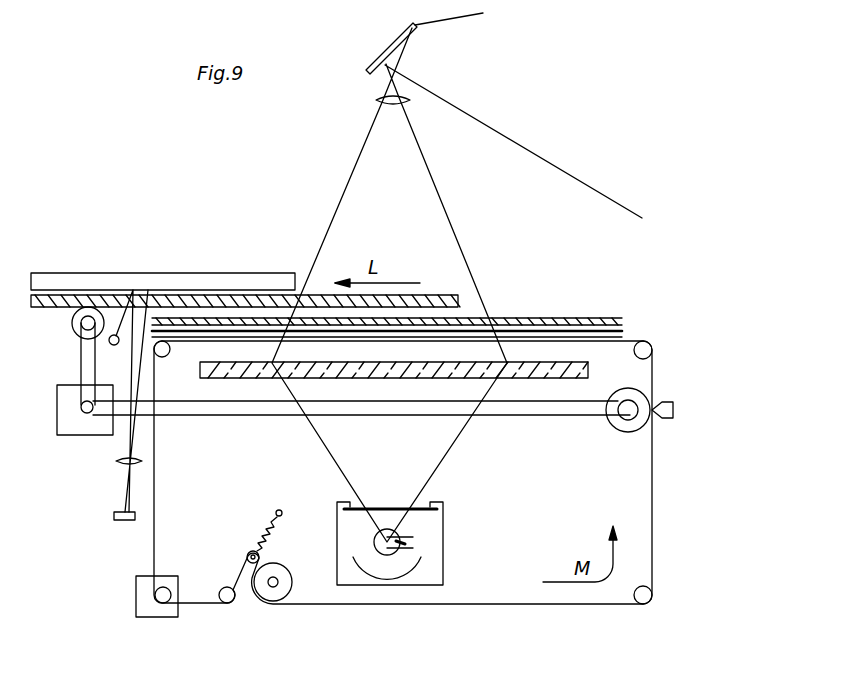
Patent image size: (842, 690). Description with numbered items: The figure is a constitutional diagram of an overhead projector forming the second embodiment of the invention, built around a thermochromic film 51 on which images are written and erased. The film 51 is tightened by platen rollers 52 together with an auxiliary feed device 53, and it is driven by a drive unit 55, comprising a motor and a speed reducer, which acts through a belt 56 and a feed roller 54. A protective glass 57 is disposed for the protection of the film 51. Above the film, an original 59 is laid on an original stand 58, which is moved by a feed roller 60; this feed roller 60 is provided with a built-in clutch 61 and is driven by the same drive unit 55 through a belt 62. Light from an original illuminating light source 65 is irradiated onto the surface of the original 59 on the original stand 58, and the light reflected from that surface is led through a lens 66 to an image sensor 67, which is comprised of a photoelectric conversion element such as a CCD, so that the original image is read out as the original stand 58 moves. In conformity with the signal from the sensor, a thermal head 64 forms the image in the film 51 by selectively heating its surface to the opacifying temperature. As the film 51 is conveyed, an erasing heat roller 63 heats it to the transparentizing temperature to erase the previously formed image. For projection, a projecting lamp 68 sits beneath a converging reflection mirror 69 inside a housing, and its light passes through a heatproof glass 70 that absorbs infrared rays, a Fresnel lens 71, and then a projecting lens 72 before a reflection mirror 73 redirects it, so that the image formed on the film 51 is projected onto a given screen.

The thermochromic film 51 is at (655, 378).
The platen rollers 52 is at (651, 345).
The auxiliary feed device 53 is at (148, 618).
The feed roller 54 is at (628, 432).
The drive unit 55 is at (58, 420).
The belt 56 is at (553, 418).
The protective glass 57 is at (603, 318).
The original stand 58 is at (413, 295).
The original 59 is at (230, 273).
The feed roller 60 is at (80, 334).
The built-in clutch 61 is at (72, 323).
The belt 62 is at (78, 372).
The erasing heat roller 63 is at (283, 568).
The thermal head 64 is at (668, 419).
The original illuminating light source 65 is at (114, 346).
The lens 66 is at (117, 462).
The image sensor 67 is at (121, 522).
The projecting lamp 68 is at (375, 542).
The reflector 69 is at (412, 582).
The heatproof glass 70 is at (392, 502).
The Fresnel lens 71 is at (590, 371).
The projecting lens 72 is at (376, 102).
The reflection mirror 73 is at (396, 32).